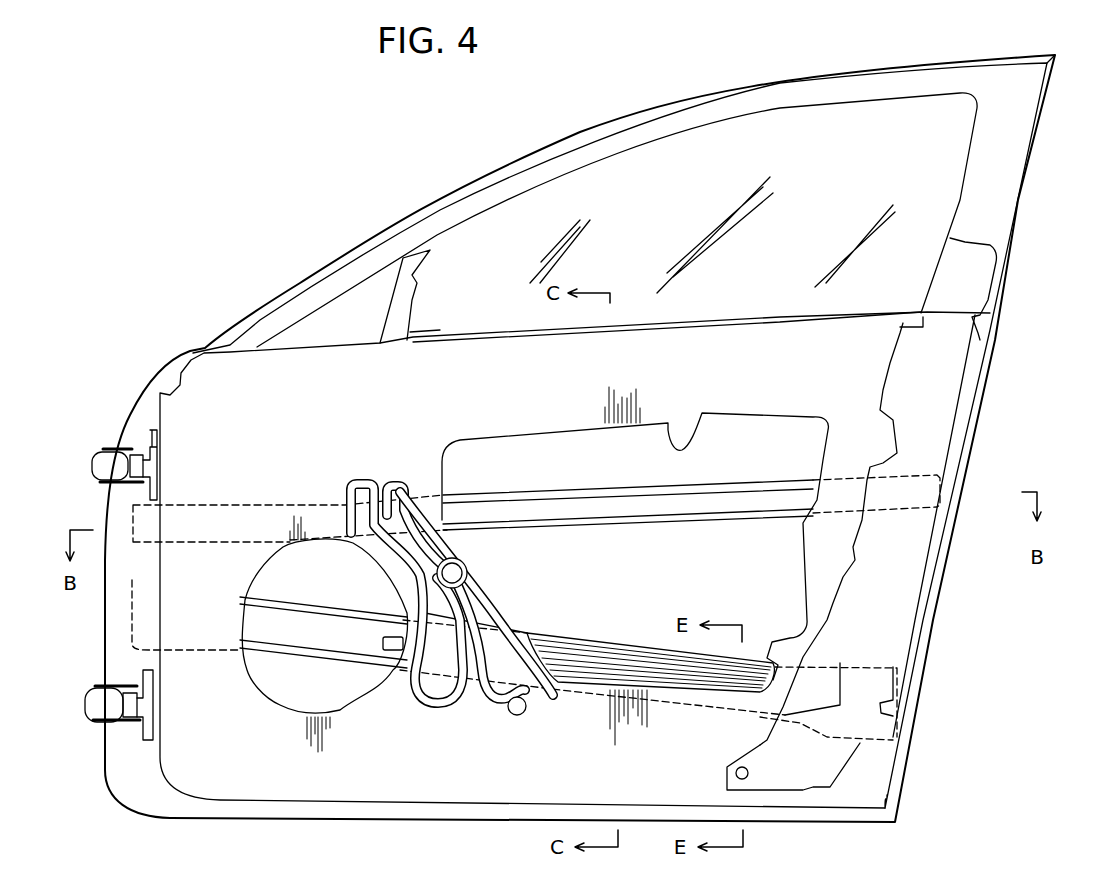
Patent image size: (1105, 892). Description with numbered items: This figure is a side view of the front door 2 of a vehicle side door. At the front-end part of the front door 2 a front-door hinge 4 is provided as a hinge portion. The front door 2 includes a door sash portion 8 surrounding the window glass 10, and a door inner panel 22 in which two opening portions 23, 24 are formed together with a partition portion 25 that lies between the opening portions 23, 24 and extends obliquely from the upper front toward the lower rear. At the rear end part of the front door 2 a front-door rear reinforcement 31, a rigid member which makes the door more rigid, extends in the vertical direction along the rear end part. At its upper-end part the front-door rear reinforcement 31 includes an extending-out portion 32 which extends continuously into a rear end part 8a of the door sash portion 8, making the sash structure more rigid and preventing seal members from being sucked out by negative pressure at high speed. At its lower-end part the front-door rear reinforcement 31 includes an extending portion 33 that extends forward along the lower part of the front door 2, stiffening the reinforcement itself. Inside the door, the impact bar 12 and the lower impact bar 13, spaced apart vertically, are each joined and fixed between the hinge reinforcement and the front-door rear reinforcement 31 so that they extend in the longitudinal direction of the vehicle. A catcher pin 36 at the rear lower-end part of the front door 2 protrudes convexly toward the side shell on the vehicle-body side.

The front door 2 is at (408, 820).
The front-door hinge 4 is at (115, 447).
The door sash portion 8 is at (612, 138).
The rear end part of door sash portion 8a is at (1003, 138).
The window glass 10 is at (632, 218).
The impact bar 12 is at (600, 492).
The lower impact bar 13 is at (620, 645).
The door inner panel 22 is at (300, 432).
The opening portion 23 is at (698, 422).
The opening portion 24 is at (270, 583).
The partition portion 25 is at (502, 604).
The front-door rear reinforcement 31 is at (893, 365).
The extending-out portion 32 is at (987, 295).
The extending portion 33 is at (786, 792).
The catcher pin 36 is at (735, 766).